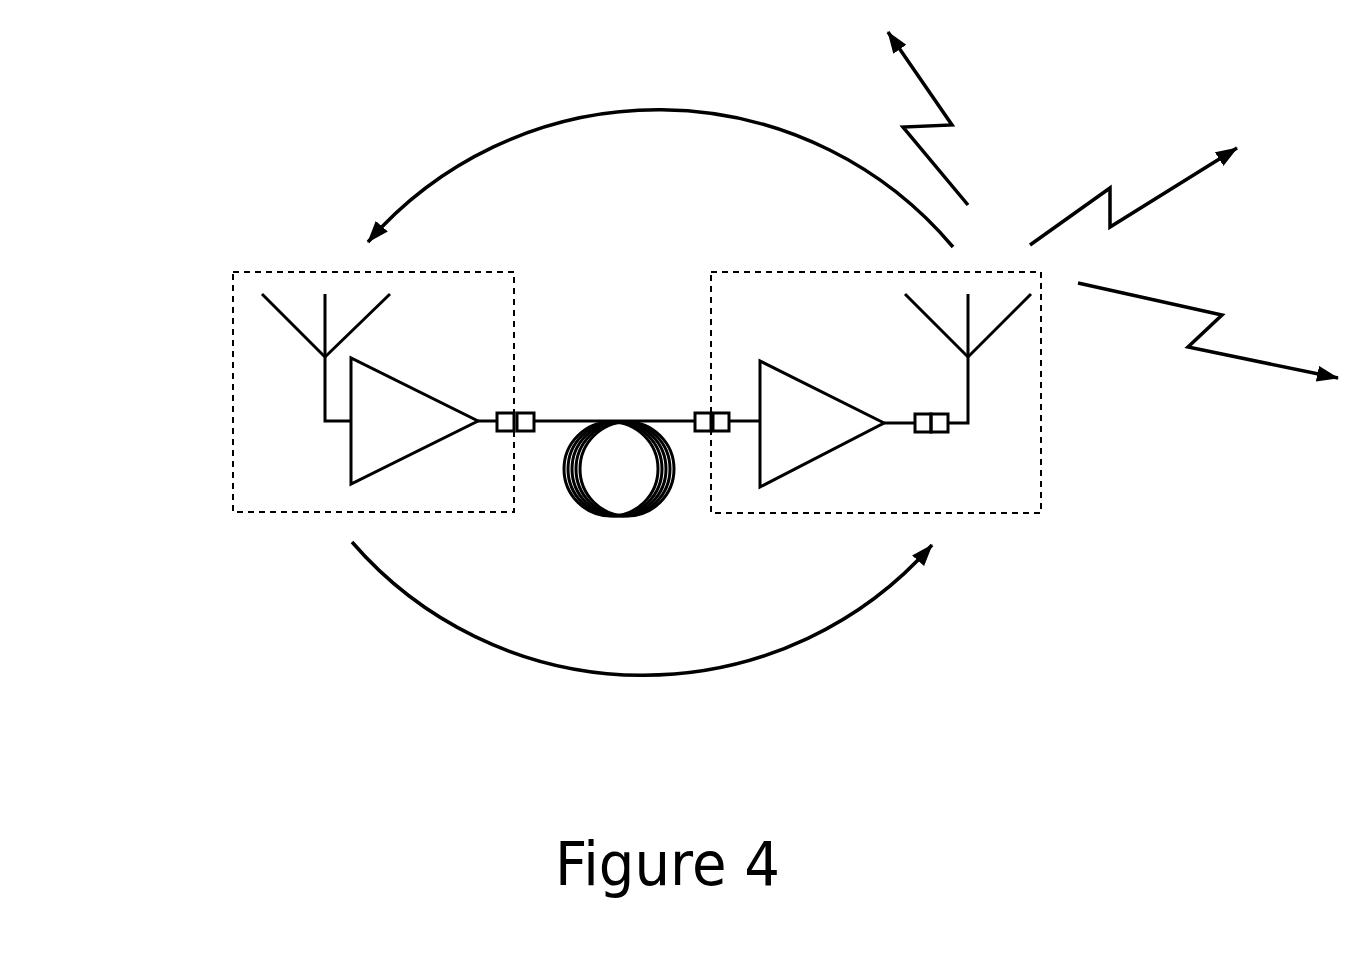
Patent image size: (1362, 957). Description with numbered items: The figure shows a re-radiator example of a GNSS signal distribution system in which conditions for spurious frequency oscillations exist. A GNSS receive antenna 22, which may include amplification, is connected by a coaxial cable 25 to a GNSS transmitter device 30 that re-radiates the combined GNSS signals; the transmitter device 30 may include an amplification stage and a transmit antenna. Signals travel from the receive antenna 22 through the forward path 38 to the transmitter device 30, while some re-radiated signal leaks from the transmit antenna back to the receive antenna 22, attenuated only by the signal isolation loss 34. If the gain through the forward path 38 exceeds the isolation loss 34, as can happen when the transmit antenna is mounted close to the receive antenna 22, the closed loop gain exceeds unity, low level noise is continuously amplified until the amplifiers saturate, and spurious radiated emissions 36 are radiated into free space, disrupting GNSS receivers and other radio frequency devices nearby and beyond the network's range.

The GNSS receive antenna 22 is at (233, 512).
The coaxial cable 25 is at (583, 418).
The GNSS transmitter device 30 is at (710, 308).
The signal isolation loss 34 is at (553, 122).
The spurious radiated emissions 36 is at (900, 110).
The forward path 38 is at (547, 683).